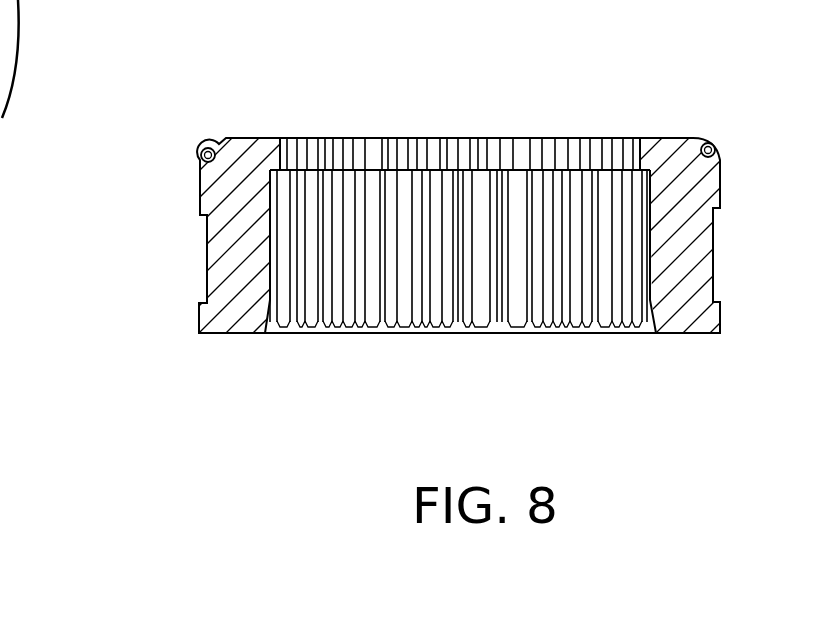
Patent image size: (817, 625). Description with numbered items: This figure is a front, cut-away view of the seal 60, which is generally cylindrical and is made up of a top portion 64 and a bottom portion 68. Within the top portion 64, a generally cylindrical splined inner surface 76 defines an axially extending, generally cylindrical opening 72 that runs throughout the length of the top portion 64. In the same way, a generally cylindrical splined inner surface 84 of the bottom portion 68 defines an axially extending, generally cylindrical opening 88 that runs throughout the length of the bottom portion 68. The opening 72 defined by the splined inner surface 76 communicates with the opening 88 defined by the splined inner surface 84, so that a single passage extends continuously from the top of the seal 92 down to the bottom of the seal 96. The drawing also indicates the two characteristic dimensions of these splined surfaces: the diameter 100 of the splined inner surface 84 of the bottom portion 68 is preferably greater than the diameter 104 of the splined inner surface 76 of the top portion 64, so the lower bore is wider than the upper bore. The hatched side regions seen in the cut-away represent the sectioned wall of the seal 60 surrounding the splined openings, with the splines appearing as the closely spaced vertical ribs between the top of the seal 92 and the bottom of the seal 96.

The seal 60 is at (725, 158).
The top portion 64 is at (672, 143).
The bottom portion 68 is at (682, 297).
The opening 72 is at (453, 138).
The splined inner surface 76 is at (262, 140).
The splined inner surface 84 is at (273, 298).
The opening 88 is at (423, 333).
The top of the seal 92 is at (540, 133).
The bottom of the seal 96 is at (573, 335).
The diameter 100 is at (271, 350).
The diameter 104 is at (280, 63).